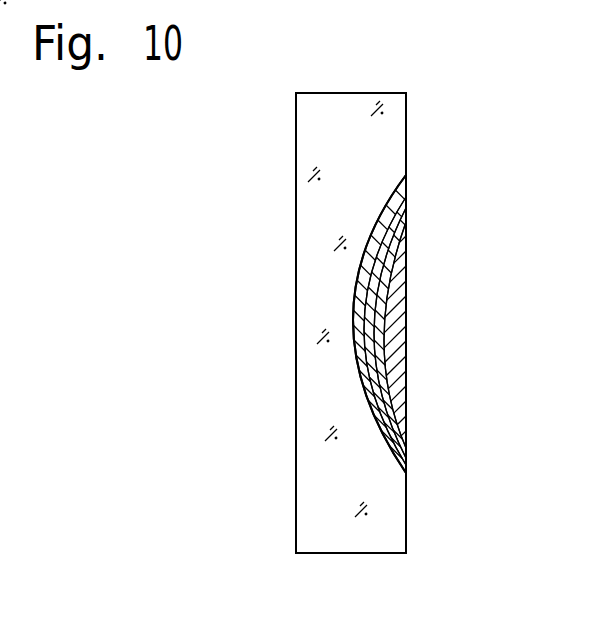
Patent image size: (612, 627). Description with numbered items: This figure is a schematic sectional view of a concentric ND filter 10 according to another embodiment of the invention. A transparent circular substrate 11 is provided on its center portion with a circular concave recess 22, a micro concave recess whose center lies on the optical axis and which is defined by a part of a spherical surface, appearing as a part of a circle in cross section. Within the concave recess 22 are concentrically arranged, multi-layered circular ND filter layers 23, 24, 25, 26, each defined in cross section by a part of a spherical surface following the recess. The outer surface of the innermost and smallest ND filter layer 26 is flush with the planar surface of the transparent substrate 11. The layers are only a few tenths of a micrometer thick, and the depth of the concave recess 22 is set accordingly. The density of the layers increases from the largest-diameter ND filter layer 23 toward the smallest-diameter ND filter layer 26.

The concentric ND filter 10 is at (248, 148).
The transparent circular substrate 11 is at (398, 132).
The circular concave recess 22 is at (403, 452).
The ND filter layer (largest diameter) 23 is at (406, 179).
The ND filter layer 24 is at (400, 203).
The ND filter layer 25 is at (405, 218).
The ND filter layer (innermost, smallest diameter) 26 is at (405, 240).